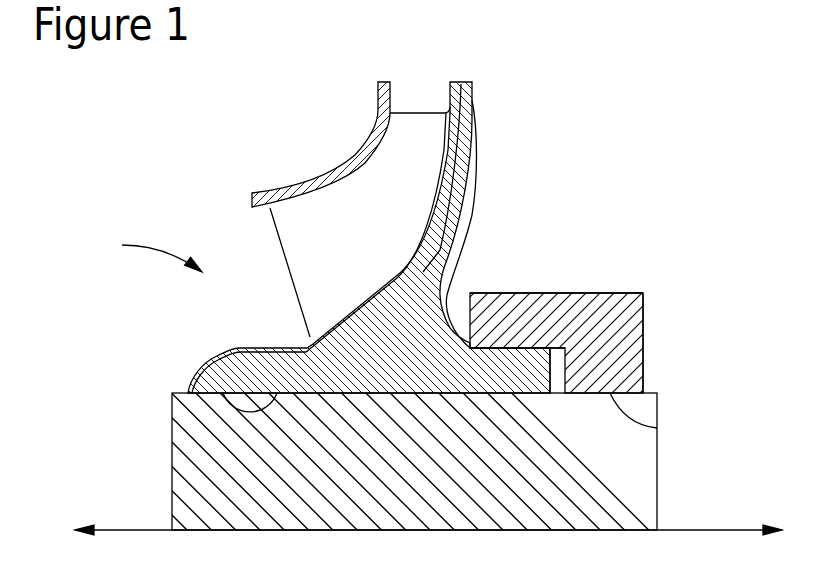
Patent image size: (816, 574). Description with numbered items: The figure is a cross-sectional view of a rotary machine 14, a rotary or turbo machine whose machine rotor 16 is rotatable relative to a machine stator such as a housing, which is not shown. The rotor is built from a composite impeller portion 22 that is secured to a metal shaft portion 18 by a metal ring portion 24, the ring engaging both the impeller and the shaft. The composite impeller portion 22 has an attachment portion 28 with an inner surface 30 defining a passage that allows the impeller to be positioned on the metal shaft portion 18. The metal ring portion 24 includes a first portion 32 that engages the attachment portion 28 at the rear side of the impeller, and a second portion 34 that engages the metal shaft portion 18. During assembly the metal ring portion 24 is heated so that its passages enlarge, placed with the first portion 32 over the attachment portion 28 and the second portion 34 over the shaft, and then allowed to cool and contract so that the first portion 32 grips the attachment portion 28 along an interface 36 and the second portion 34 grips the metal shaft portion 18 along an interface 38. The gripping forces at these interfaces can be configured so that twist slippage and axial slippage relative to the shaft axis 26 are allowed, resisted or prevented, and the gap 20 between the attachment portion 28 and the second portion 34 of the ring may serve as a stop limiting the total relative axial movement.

The rotary machine 14 is at (173, 127).
The machine rotor 16 is at (145, 252).
The metal shaft portion 18 is at (180, 437).
The gap 20 is at (575, 349).
The composite impeller portion 22 is at (348, 162).
The metal ring portion 24 is at (593, 295).
The shaft axis 26 is at (718, 530).
The attachment portion 28 is at (512, 367).
The inner surface 30 is at (208, 378).
The first portion 32 is at (547, 303).
The second portion 34 is at (623, 332).
The interface 36 is at (490, 350).
The interface 38 is at (617, 398).